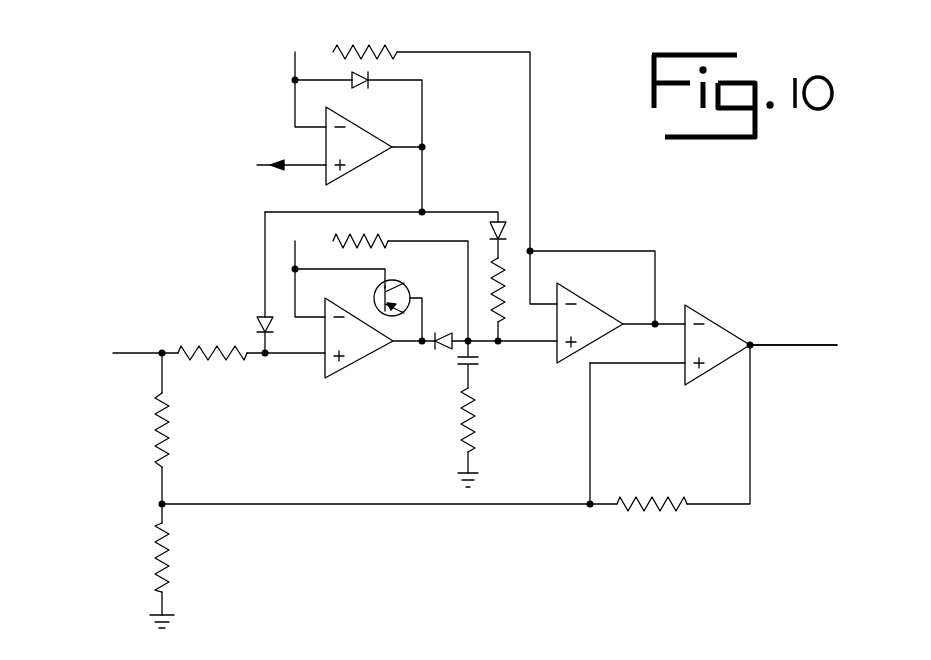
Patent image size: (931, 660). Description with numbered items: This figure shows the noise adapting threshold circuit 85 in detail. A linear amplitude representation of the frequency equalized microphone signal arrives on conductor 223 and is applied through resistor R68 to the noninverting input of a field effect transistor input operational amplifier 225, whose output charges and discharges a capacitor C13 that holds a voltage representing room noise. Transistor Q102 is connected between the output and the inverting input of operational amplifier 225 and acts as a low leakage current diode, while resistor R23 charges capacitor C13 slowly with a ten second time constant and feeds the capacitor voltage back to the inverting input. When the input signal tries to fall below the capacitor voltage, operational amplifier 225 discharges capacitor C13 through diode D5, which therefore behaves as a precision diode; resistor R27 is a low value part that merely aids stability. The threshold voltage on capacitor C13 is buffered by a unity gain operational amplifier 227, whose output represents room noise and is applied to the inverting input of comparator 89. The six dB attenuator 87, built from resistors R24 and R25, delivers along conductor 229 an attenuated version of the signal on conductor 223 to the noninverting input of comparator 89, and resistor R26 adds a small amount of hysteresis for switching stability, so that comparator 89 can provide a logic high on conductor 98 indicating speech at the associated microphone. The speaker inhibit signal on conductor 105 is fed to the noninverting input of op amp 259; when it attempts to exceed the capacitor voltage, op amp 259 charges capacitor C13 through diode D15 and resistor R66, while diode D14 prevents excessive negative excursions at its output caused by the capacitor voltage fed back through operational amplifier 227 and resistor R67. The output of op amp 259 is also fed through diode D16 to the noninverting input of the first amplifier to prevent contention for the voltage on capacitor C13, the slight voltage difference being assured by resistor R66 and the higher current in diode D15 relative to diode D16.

The resistor R67 is at (365, 39).
The diode D14 is at (383, 73).
The conductor 105 is at (300, 165).
The op amp 259 is at (362, 154).
The noise adapting threshold circuit 85 is at (553, 193).
The resistor R23 is at (365, 229).
The transistor Q102 is at (417, 285).
The diode D15 is at (516, 221).
The resistor R66 is at (516, 294).
The operational amplifier 227 is at (594, 312).
The comparator 89 is at (716, 332).
The conductor 98 is at (788, 342).
The conductor 223 is at (125, 353).
The diode D16 is at (250, 315).
The resistor R68 is at (212, 344).
The operational amplifier 225 is at (357, 350).
The diode D5 is at (450, 328).
The capacitor C13 is at (489, 366).
The resistor R24 is at (187, 430).
The resistor R27 is at (493, 420).
The 6 dB attenuator 87 is at (140, 492).
The conductor 229 is at (355, 505).
The resistor R25 is at (187, 557).
The resistor R26 is at (652, 494).